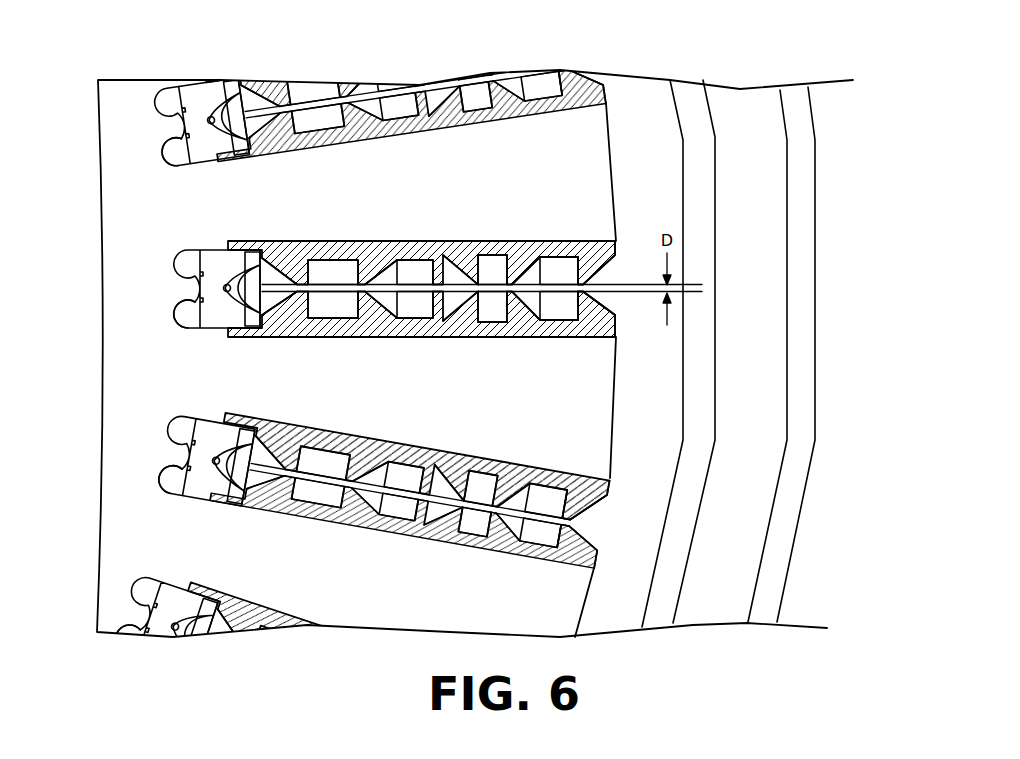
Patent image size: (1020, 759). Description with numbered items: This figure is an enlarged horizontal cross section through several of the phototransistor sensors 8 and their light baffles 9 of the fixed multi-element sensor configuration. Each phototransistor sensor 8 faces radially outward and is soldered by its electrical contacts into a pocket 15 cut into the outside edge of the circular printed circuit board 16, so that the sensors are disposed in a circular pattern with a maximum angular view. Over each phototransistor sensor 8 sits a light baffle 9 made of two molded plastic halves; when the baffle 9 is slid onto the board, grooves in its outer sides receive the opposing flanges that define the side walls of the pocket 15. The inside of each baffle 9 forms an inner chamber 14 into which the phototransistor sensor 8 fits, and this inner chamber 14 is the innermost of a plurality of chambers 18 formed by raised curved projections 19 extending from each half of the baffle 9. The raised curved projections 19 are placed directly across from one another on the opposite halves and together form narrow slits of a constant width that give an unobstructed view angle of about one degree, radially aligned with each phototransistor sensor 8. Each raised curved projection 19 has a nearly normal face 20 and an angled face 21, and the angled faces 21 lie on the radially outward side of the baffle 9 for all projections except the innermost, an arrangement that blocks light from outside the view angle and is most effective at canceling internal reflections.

The phototransistor sensor 8 is at (188, 90).
The light baffle 9 is at (557, 109).
The inner chamber 14 is at (263, 253).
The pocket 15 is at (168, 161).
The circular printed circuit board 16 is at (441, 184).
The chamber 18 is at (330, 319).
The raised curved projection 19 is at (364, 278).
The nearly normal face 20 is at (512, 257).
The angled face 21 is at (550, 264).